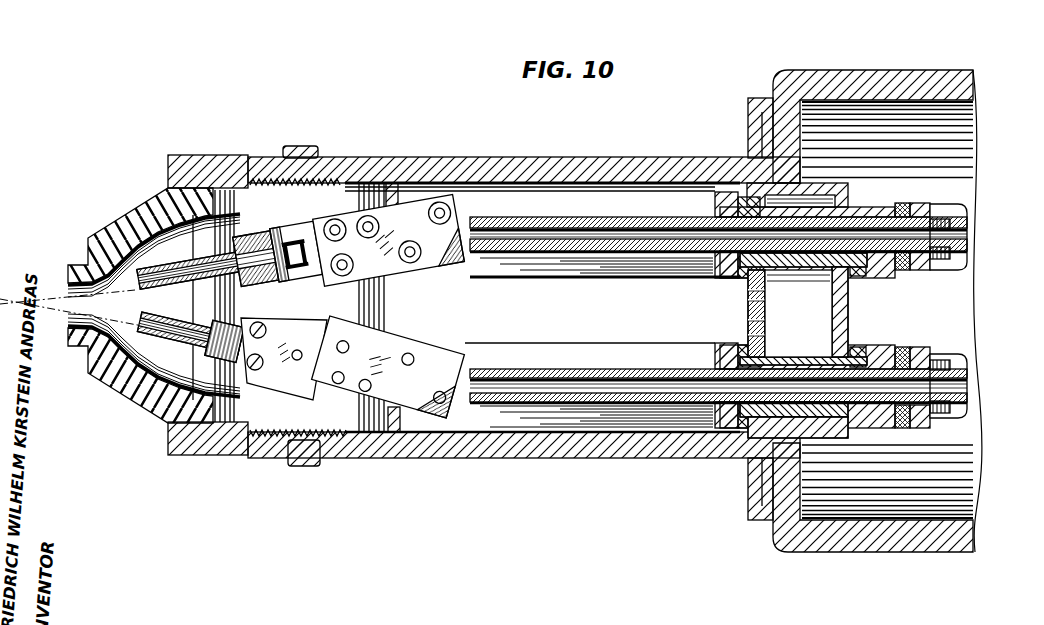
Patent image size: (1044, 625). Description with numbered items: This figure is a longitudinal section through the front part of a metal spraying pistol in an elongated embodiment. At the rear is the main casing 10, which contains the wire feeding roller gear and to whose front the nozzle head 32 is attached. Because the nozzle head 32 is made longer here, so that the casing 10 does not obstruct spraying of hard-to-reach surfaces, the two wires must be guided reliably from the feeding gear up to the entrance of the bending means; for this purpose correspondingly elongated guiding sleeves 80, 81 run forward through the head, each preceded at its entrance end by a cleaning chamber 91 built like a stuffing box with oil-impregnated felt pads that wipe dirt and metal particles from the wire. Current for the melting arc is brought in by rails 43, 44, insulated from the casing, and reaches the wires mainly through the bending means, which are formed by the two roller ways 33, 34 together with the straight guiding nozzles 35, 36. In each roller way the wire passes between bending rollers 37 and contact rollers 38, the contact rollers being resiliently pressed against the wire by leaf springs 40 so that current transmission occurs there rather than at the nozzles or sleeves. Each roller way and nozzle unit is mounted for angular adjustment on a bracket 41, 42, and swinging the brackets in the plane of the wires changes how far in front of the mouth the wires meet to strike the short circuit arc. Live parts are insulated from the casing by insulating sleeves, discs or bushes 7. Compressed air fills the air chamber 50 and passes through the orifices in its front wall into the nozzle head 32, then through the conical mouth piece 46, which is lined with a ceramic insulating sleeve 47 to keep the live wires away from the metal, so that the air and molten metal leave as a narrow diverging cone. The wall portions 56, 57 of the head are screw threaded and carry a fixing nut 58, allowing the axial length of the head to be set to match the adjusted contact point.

The insulating bushes 7 is at (745, 345).
The main casing 10 is at (900, 78).
The nozzle head 32 is at (257, 434).
The bending roller way 33 is at (393, 212).
The bending roller way 34 is at (415, 400).
The straight guiding nozzle 35 is at (172, 267).
The straight guiding nozzle 36 is at (170, 338).
The bending rollers 37 is at (412, 263).
The contact rollers 38 is at (293, 247).
The leaf springs 40 is at (290, 334).
The bracket 41 is at (566, 200).
The bracket 42 is at (562, 415).
The current supply rail 43 is at (893, 277).
The current supply rail 44 is at (895, 346).
The conical mouth piece 46 is at (128, 223).
The insulating conical sleeve 47 is at (95, 337).
The air chamber 50 is at (798, 312).
The screw-threaded wall portion 56 is at (455, 163).
The screw-threaded wall portion 57 is at (341, 181).
The fixing nut 58 is at (306, 463).
The elongated guiding sleeve 80 is at (634, 214).
The elongated guiding sleeve 81 is at (643, 403).
The cleaning chamber 91 is at (967, 220).